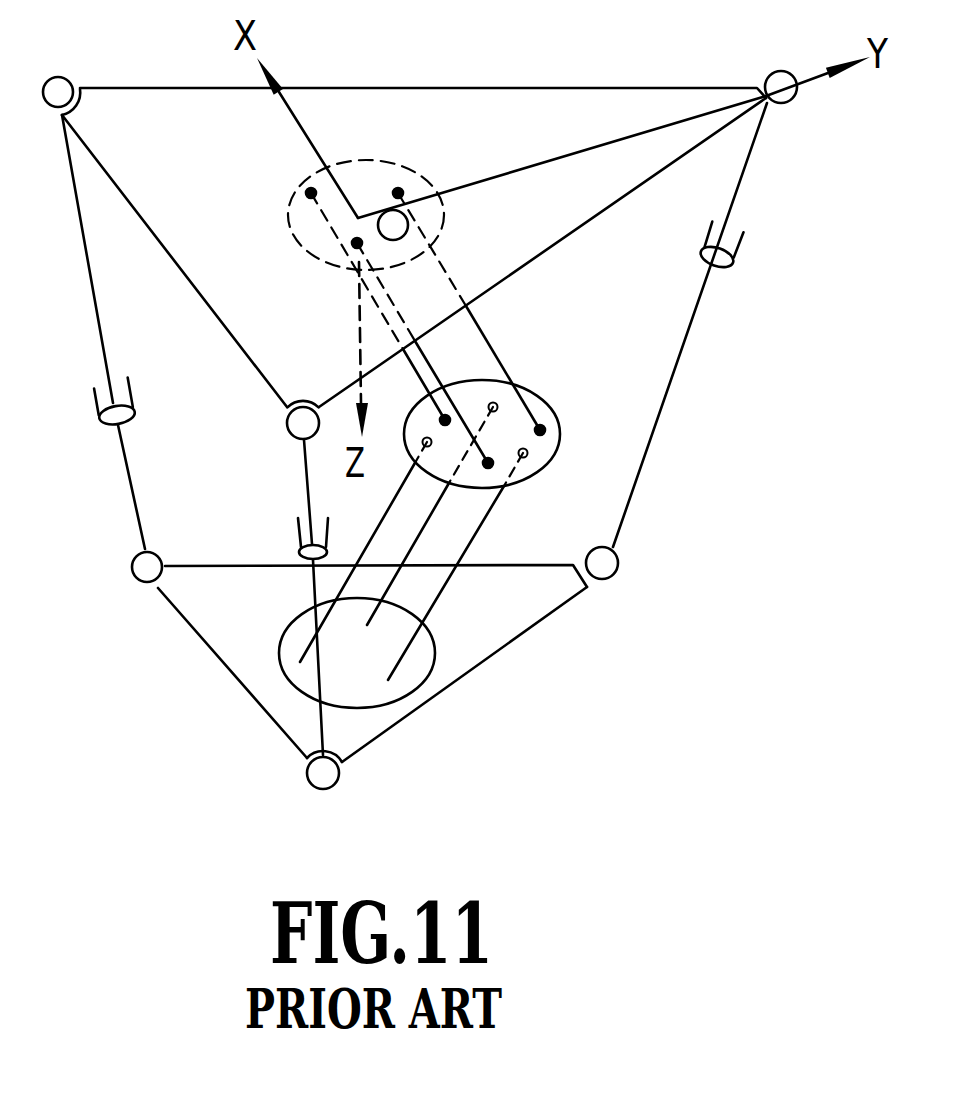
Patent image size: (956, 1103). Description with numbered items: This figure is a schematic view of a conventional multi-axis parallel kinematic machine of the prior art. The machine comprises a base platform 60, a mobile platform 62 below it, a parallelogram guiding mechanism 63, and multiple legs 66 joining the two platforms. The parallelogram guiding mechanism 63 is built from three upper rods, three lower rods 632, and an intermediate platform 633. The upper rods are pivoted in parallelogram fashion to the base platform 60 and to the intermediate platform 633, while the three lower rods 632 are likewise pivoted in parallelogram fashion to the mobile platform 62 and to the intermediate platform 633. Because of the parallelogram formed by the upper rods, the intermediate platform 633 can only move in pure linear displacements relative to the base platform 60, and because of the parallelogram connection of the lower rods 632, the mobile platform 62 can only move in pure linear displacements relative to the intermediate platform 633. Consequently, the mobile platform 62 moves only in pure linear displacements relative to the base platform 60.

The base platform 60 is at (527, 106).
The mobile platform 62 is at (467, 657).
The parallelogram guiding mechanism 63 is at (368, 580).
The lower rods 632 is at (475, 535).
The intermediate platform 633 is at (565, 450).
The legs 66 is at (728, 315).